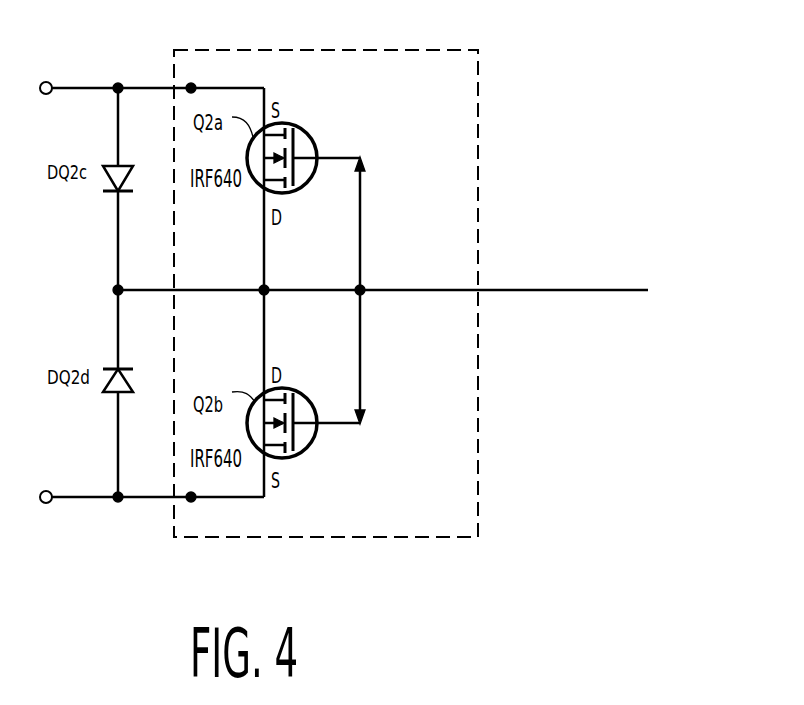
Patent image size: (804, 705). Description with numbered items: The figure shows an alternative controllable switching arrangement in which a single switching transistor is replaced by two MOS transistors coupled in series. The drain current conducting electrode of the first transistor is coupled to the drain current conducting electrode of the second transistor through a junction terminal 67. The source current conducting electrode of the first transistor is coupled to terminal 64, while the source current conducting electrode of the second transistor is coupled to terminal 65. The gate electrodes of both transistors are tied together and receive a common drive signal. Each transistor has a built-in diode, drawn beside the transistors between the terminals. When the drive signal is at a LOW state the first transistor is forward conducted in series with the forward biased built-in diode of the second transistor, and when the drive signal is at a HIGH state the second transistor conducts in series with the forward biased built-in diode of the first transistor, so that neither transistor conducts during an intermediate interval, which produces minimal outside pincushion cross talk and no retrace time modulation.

The terminal 64 is at (192, 87).
The terminal 65 is at (191, 498).
The junction terminal 67 is at (272, 290).